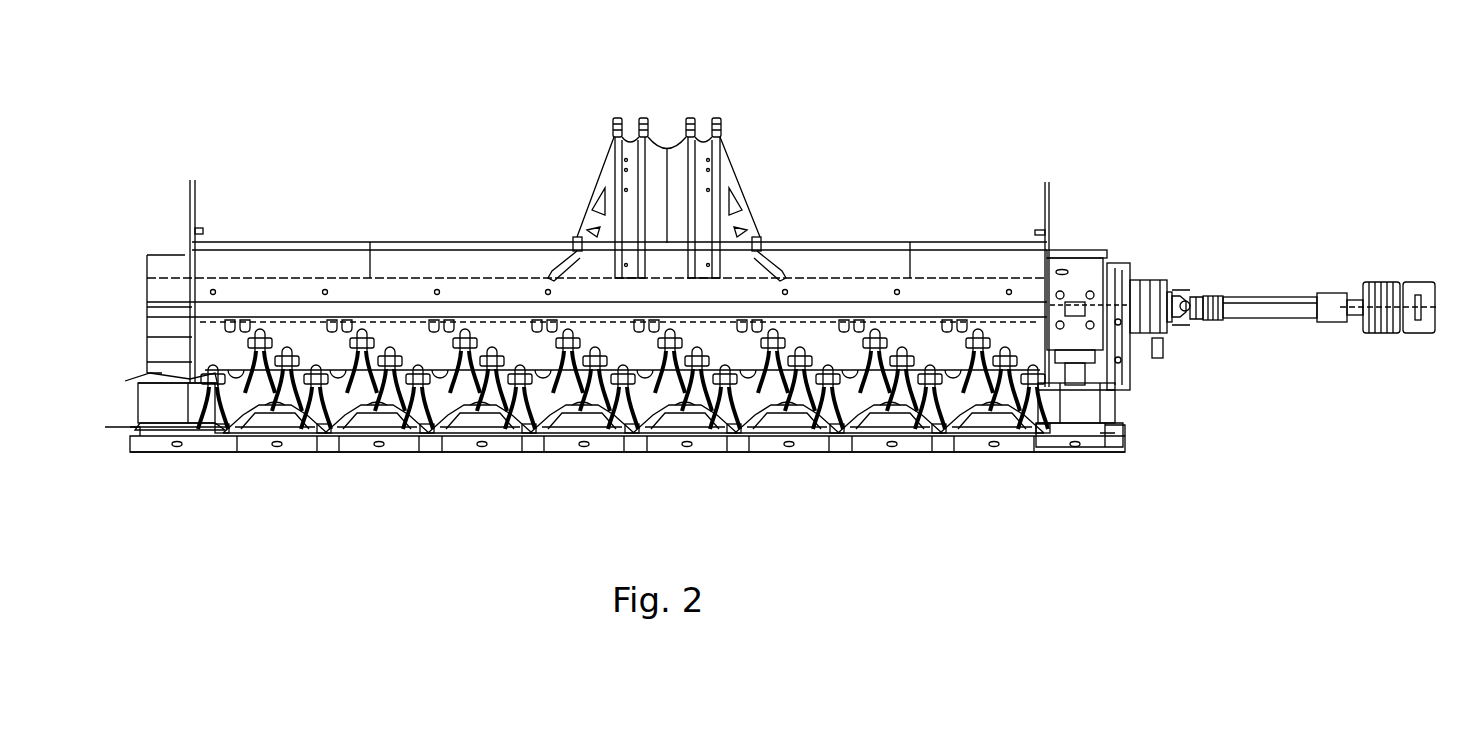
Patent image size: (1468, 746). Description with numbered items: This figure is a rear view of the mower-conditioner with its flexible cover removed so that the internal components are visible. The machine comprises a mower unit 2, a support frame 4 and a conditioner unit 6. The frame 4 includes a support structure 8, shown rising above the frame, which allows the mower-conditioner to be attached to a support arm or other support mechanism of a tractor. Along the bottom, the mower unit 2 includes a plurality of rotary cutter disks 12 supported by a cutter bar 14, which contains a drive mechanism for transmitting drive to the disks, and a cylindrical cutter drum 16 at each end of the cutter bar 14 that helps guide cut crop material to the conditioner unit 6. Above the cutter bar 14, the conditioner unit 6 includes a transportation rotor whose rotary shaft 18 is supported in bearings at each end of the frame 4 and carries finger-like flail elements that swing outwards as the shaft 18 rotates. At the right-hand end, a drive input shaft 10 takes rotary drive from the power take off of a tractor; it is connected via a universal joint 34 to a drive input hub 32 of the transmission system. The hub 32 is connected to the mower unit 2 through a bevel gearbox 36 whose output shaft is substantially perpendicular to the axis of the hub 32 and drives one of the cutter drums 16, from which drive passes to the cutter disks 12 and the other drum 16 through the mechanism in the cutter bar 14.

The mower unit 2 is at (490, 460).
The support frame 4 is at (430, 250).
The conditioner unit 6 is at (822, 340).
The support structure 8 is at (643, 118).
The drive input shaft 10 is at (1280, 297).
The rotary cutter disks 12 is at (380, 435).
The cutter bar 14 is at (305, 445).
The cylindrical cutter drum 16 is at (165, 410).
The rotary shaft 18 is at (303, 335).
The drive input hub 32 is at (1147, 290).
The universal joint 34 is at (1185, 300).
The bevel gearbox 36 is at (1073, 308).